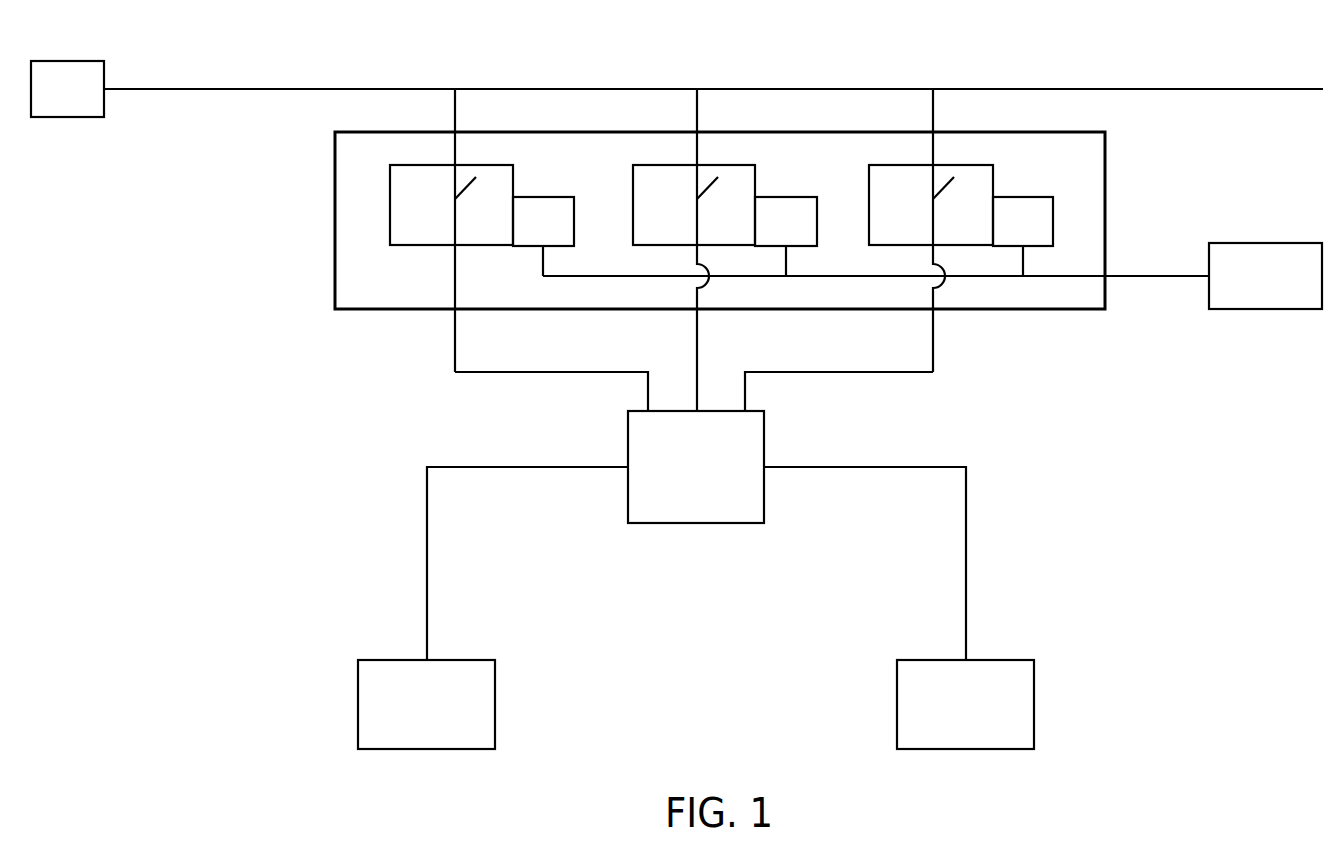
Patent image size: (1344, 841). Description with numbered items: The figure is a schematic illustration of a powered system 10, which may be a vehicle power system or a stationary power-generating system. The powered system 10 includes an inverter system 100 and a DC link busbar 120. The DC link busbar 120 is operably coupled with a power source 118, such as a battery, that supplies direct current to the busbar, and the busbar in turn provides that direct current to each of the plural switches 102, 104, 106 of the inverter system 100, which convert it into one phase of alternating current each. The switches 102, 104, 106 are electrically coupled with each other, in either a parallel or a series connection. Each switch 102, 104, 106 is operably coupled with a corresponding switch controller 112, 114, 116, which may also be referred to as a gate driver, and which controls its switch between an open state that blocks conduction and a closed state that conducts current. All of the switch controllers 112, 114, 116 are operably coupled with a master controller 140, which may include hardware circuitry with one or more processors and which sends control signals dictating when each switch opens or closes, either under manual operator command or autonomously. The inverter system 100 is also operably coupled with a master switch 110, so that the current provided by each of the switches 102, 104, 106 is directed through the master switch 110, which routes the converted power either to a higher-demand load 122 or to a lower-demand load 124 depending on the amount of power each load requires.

The powered system 10 is at (1188, 61).
The inverter system 100 is at (335, 236).
The switch 102 is at (397, 217).
The switch 104 is at (639, 217).
The switch 106 is at (876, 217).
The master switch 110 is at (672, 481).
The switch controller 112 is at (519, 234).
The switch controller 114 is at (762, 234).
The switch controller 116 is at (999, 234).
The power source 118 is at (43, 103).
The DC link busbar 120 is at (247, 88).
The higher-demand load 122 is at (403, 718).
The lower-demand load 124 is at (942, 718).
The master controller 140 is at (1241, 290).